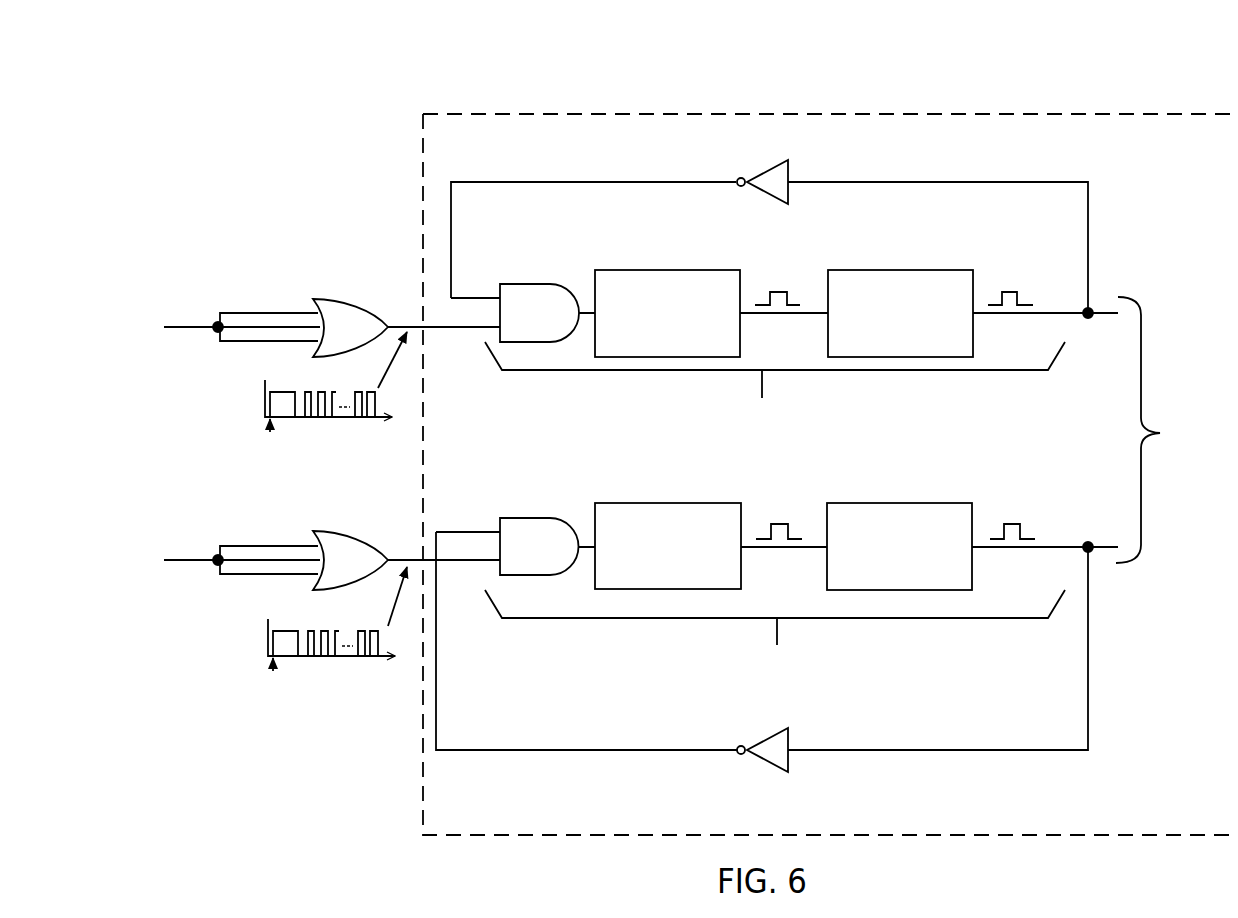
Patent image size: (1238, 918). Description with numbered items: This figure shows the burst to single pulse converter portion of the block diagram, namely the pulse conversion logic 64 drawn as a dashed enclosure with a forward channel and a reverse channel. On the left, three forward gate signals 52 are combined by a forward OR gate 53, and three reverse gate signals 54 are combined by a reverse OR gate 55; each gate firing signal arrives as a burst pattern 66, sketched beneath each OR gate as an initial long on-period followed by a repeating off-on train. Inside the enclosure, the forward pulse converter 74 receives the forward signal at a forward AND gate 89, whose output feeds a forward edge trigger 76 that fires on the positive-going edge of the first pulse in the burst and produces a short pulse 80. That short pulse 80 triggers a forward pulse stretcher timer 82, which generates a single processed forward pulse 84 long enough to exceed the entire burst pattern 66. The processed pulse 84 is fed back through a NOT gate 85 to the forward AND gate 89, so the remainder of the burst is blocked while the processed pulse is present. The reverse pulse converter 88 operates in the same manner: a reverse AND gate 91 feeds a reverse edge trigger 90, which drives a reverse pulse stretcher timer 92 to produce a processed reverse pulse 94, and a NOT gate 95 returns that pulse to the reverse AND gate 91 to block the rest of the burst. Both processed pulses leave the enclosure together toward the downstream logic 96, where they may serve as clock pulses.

The forward gate signals 52 is at (280, 313).
The forward OR gate 53 is at (365, 301).
The reverse gate signals 54 is at (280, 546).
The reverse OR gate 55 is at (372, 541).
The pulse conversion logic 64 is at (863, 107).
The burst pattern 66 is at (333, 417).
The forward pulse converter 74 is at (775, 383).
The forward edge trigger 76 is at (673, 270).
The short pulse 80 is at (775, 292).
The forward pulse stretcher timer 82 is at (922, 270).
The processed forward pulse 84 is at (1005, 292).
The NOT gate 85 is at (765, 159).
The reverse pulse converter 88 is at (775, 632).
The forward AND gate 89 is at (528, 284).
The reverse edge trigger 90 is at (672, 503).
The reverse AND gate 91 is at (532, 518).
The reverse pulse stretcher timer 92 is at (908, 503).
The processed reverse pulse 94 is at (1005, 524).
The NOT gate 95 is at (758, 757).
The output destination 96 is at (1164, 430).